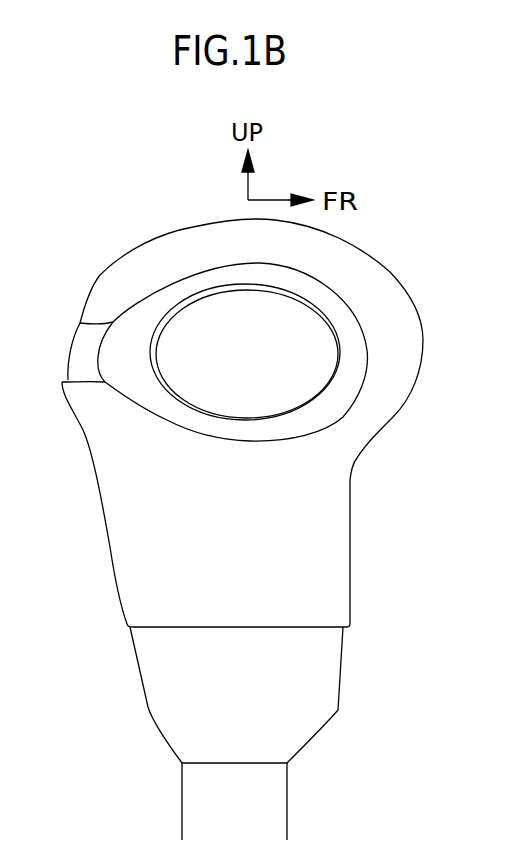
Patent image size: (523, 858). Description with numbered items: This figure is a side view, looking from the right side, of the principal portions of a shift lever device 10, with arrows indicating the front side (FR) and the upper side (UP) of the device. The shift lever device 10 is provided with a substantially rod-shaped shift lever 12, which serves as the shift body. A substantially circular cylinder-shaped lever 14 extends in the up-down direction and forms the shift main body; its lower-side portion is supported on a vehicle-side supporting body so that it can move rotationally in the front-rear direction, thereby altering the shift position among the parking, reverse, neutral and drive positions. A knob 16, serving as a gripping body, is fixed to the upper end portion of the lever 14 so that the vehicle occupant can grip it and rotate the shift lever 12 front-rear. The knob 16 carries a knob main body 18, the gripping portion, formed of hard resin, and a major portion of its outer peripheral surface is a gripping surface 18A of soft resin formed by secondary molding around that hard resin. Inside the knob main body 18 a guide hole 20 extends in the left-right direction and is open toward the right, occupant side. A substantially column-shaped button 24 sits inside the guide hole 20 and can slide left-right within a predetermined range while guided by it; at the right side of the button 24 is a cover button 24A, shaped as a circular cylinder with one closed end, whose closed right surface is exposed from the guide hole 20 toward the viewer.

The shift lever device 10 is at (103, 240).
The shift lever 12 is at (363, 248).
The lever 14 is at (183, 802).
The knob 16 is at (118, 580).
The knob main body 18 is at (194, 227).
The gripping surface 18A is at (342, 565).
The guide hole 20 is at (249, 410).
The button 24 is at (212, 397).
The cover button 24A is at (290, 402).